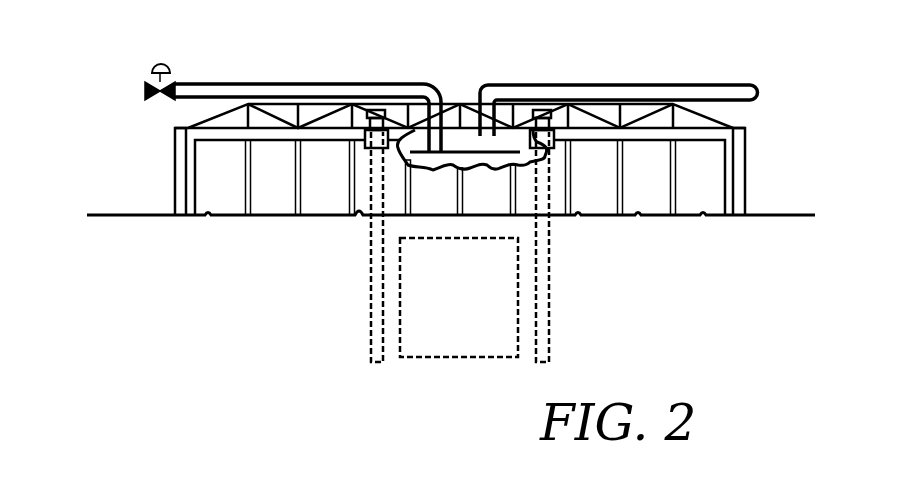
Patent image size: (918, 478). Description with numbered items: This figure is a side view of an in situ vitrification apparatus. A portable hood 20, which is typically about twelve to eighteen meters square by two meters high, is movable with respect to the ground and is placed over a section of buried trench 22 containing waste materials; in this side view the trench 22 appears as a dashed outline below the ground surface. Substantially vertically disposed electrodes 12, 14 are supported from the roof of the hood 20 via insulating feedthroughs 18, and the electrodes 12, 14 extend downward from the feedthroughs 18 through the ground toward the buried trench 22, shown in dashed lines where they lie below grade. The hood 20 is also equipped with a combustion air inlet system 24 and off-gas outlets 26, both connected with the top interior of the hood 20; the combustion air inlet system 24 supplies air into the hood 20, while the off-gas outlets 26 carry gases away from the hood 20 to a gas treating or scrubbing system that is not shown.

The electrode 12 is at (370, 347).
The electrode 14 is at (552, 348).
The insulating feedthroughs 18 is at (521, 88).
The portable hood 20 is at (745, 180).
The buried trench 22 is at (459, 358).
The combustion air inlet system 24 is at (332, 83).
The off-gas outlets 26 is at (682, 83).